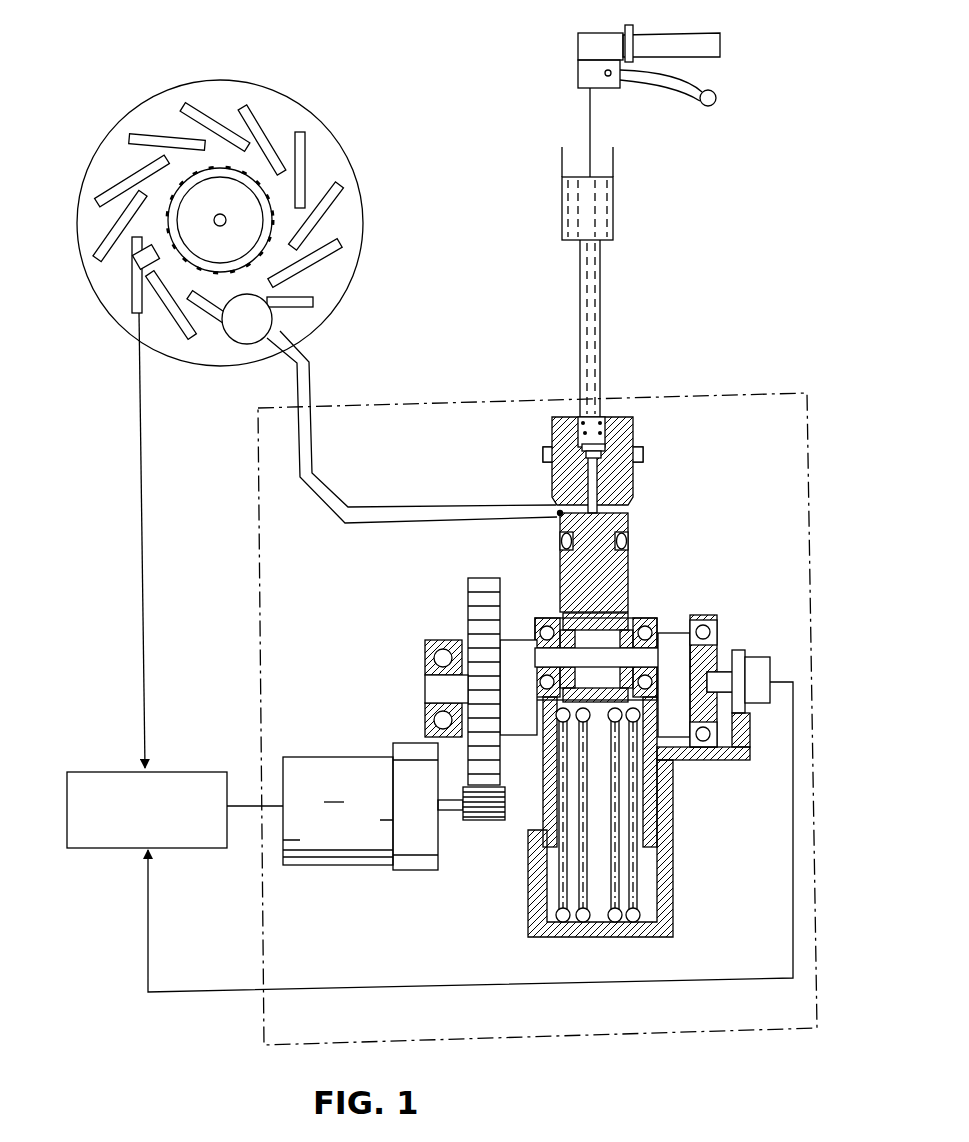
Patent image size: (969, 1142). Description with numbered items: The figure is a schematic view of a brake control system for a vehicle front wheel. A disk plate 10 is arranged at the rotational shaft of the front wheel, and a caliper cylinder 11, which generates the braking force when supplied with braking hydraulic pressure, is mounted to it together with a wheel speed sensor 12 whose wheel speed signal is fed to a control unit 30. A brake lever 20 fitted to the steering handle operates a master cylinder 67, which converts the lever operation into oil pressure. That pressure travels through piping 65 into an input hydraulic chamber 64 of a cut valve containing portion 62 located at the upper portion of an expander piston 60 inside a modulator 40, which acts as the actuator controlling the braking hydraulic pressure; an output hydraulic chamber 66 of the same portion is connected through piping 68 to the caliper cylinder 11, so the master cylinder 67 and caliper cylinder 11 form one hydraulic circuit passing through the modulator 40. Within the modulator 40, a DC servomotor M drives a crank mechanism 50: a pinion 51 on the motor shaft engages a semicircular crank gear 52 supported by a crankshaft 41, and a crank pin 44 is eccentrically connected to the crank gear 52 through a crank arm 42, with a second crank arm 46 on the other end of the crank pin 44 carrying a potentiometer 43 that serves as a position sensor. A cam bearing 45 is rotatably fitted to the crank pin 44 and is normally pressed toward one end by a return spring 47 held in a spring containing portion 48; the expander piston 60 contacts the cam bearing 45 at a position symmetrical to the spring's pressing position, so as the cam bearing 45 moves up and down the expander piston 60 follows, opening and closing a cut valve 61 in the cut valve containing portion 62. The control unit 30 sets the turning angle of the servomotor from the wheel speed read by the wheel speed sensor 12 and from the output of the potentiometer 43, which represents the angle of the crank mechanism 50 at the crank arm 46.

The disk plate 10 is at (338, 158).
The caliper cylinder 11 is at (240, 335).
The wheel speed sensor 12 is at (130, 262).
The brake lever 20 is at (712, 108).
The control unit 30 is at (195, 771).
The modulator 40 is at (747, 392).
The crankshaft 41 is at (433, 690).
The crank arm 42 is at (518, 645).
The potentiometer 43 is at (760, 670).
The crank pin 44 is at (655, 620).
The cam bearing 45 is at (623, 617).
The crank arm 46 is at (667, 667).
The return spring 47 is at (633, 887).
The spring containing portion 48 is at (655, 950).
The crank mechanism 50 is at (440, 590).
The pinion 51 is at (485, 822).
The crank gear 52 is at (485, 580).
The expander piston 60 is at (612, 572).
The cut valve 61 is at (593, 492).
The cut valve containing portion 62 is at (543, 457).
The input hydraulic chamber 64 is at (580, 420).
The piping 65 is at (595, 315).
The output hydraulic chamber 66 is at (558, 512).
The master cylinder 67 is at (562, 212).
The piping 68 is at (377, 507).